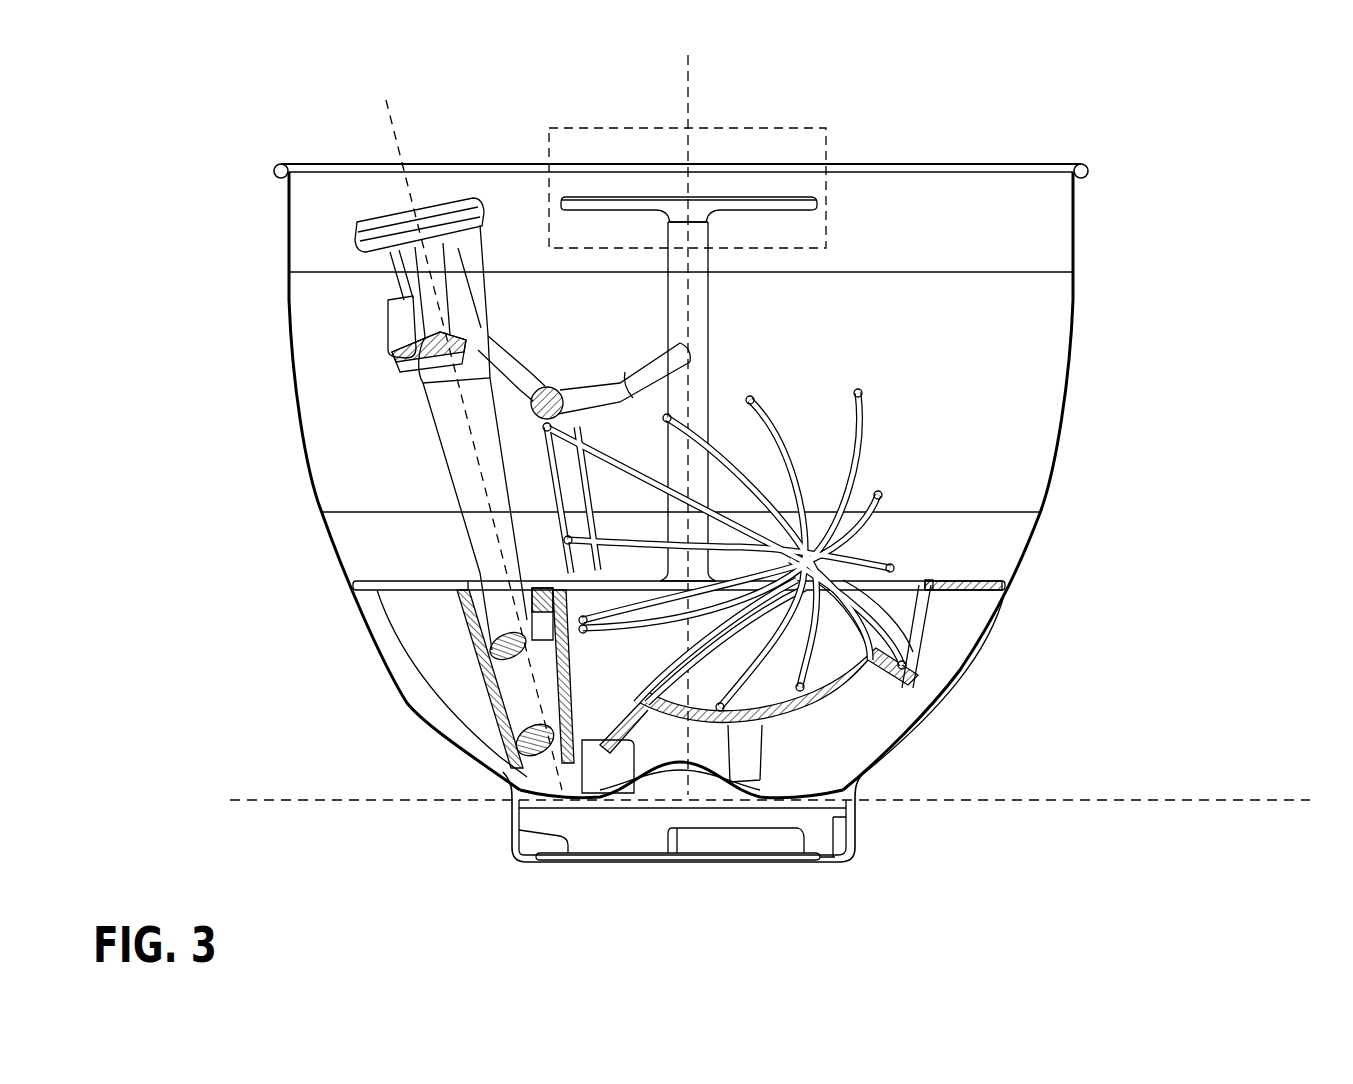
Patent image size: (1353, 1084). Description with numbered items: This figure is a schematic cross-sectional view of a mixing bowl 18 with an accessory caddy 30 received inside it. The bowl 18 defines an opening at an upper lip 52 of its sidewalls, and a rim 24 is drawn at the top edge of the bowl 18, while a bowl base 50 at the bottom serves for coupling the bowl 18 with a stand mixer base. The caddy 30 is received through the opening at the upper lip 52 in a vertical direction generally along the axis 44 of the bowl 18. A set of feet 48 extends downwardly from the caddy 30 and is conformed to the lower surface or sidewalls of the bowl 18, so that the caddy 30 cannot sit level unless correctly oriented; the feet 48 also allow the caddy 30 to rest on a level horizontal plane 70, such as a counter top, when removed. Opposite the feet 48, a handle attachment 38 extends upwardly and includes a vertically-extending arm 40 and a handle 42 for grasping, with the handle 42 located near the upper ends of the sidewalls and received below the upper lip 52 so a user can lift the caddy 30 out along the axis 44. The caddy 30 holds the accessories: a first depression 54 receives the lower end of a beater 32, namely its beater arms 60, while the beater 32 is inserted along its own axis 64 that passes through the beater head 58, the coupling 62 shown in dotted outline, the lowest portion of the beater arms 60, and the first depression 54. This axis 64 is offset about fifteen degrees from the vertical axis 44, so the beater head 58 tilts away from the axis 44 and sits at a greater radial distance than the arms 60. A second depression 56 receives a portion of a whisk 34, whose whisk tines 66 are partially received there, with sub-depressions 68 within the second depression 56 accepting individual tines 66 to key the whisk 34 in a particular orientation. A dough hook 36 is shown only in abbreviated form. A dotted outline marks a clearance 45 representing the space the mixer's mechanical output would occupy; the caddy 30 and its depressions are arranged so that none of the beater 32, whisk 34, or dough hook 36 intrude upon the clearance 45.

The bowl 18 is at (1076, 243).
The bowl rim 24 is at (1071, 198).
The caddy 30 is at (410, 679).
The beater 32 is at (438, 392).
The whisk 34 is at (872, 412).
The dough hook 36 is at (668, 368).
The handle attachment 38 is at (650, 192).
The arm 40 is at (697, 293).
The handle 42 is at (609, 196).
The axis 44 is at (690, 90).
The clearance 45 is at (827, 127).
The set of feet 48 is at (480, 640).
The bowl base 50 is at (866, 880).
The upper lip 52 is at (328, 158).
The first depression 54 is at (493, 695).
The second depression 56 is at (908, 612).
The beater head 58 is at (509, 334).
The beater arms 60 is at (486, 240).
The coupling 62 is at (443, 213).
The axis of the beater 64 is at (390, 107).
The whisk tines 66 is at (860, 460).
The sub-depressions 68 is at (918, 676).
The horizontal plane 70 is at (1200, 797).